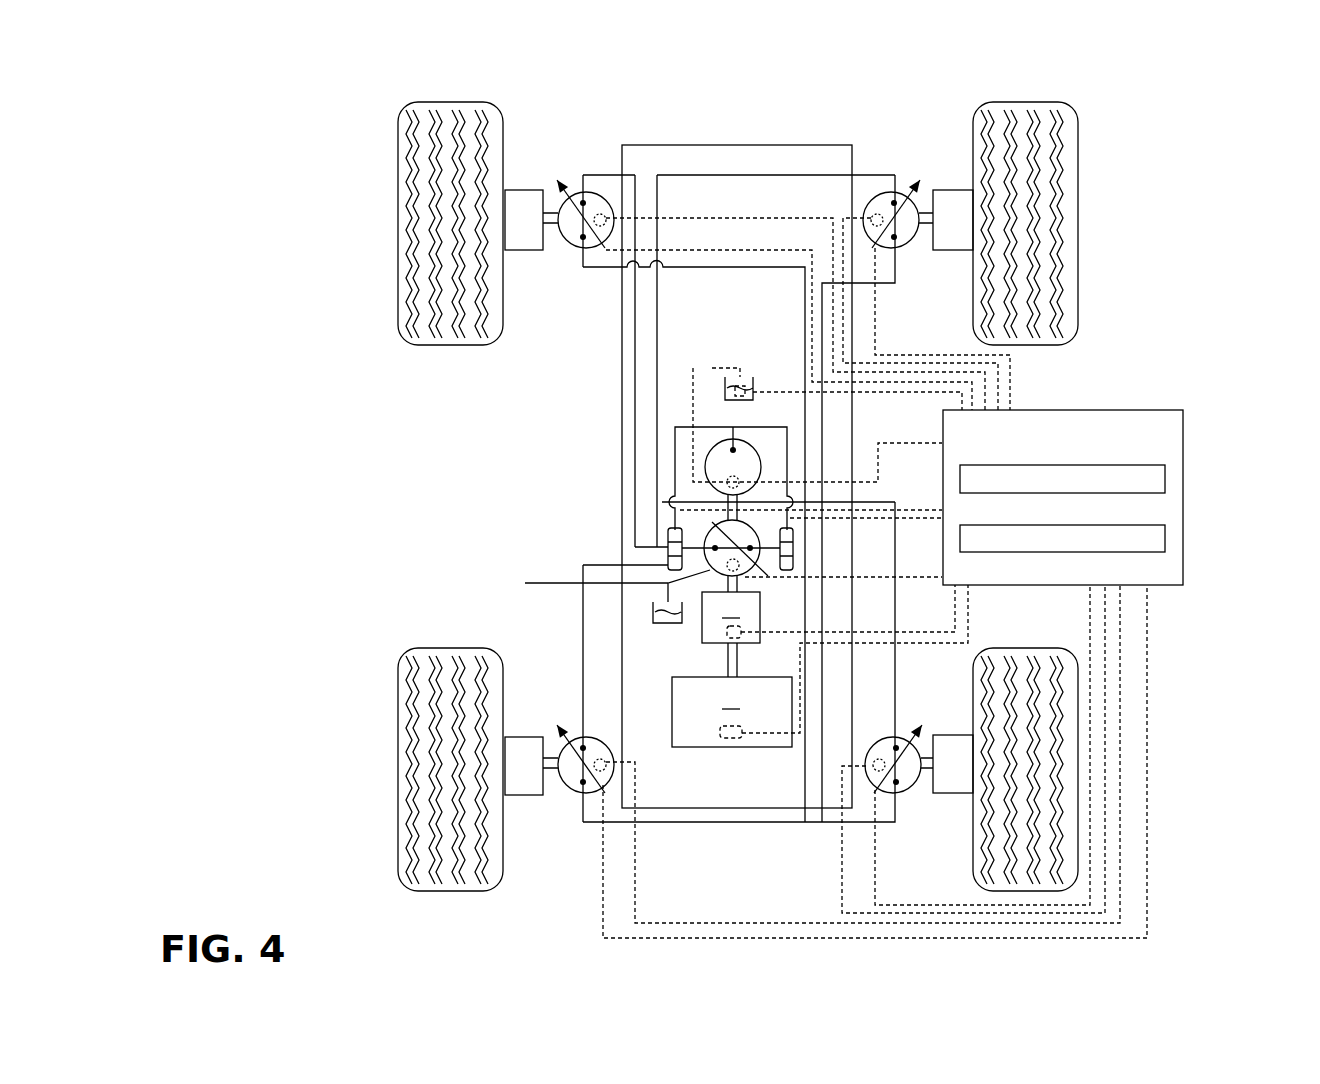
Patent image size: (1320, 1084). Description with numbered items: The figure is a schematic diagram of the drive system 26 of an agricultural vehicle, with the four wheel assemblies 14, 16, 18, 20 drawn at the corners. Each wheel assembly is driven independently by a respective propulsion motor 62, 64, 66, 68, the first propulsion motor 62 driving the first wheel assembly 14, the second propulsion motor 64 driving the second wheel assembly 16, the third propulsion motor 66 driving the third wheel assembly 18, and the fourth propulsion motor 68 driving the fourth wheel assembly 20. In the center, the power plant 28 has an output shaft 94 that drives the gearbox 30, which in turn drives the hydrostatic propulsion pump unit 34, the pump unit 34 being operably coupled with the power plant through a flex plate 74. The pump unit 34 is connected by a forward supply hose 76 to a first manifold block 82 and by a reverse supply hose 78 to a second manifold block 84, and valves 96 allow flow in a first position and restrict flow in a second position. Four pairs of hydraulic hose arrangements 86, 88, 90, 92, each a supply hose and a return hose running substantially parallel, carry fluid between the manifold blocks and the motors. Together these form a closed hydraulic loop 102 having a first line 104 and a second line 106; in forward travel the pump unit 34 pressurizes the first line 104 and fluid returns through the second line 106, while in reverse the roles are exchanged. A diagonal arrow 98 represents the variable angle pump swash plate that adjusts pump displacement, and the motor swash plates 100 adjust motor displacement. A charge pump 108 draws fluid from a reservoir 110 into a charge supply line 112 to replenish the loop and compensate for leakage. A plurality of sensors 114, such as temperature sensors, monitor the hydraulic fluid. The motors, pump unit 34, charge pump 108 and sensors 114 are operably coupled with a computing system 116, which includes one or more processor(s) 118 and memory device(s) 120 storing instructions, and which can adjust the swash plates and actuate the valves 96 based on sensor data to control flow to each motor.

The first wheel assembly 14 is at (503, 100).
The second wheel assembly 16 is at (962, 843).
The third wheel assembly 18 is at (515, 670).
The fourth wheel assembly 20 is at (967, 100).
The drive system 26 is at (1120, 103).
The power plant 28 is at (732, 712).
The gearbox 30 is at (731, 617).
The hydrostatic propulsion pump unit 34 is at (660, 558).
The first propulsion motor 62 is at (582, 202).
The second propulsion motor 64 is at (905, 792).
The third propulsion motor 66 is at (575, 790).
The fourth propulsion motor 68 is at (895, 202).
The flex plate 74 is at (758, 580).
The forward supply hose 76 is at (602, 586).
The reverse supply hose 78 is at (768, 570).
The first manifold block 82 is at (697, 524).
The second manifold block 84 is at (795, 572).
The hydraulic hose arrangement 86 is at (643, 147).
The hydraulic hose arrangement 88 is at (826, 828).
The hydraulic hose arrangement 90 is at (588, 830).
The hydraulic hose arrangement 92 is at (916, 252).
The output shaft 94 is at (740, 665).
The valves 96 is at (664, 542).
The pump swash plate 98 is at (755, 503).
The motor swash plates 100 is at (556, 180).
The closed hydraulic loop 102 is at (597, 405).
The first line 104 is at (600, 177).
The second line 106 is at (600, 268).
The charge pump 108 is at (758, 457).
The reservoir 110 is at (755, 380).
The charge supply line 112 is at (712, 368).
The sensors 114 is at (612, 213).
The computing system 116 is at (1130, 410).
The processor(s) 118 is at (1168, 480).
The memory device(s) 120 is at (1168, 540).